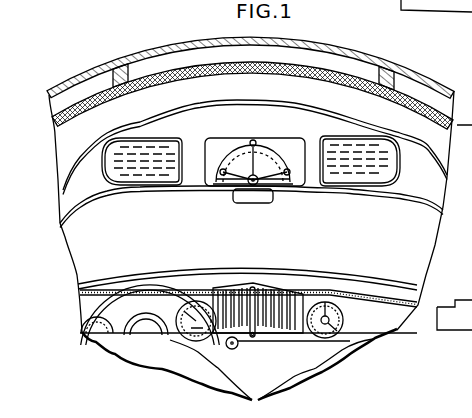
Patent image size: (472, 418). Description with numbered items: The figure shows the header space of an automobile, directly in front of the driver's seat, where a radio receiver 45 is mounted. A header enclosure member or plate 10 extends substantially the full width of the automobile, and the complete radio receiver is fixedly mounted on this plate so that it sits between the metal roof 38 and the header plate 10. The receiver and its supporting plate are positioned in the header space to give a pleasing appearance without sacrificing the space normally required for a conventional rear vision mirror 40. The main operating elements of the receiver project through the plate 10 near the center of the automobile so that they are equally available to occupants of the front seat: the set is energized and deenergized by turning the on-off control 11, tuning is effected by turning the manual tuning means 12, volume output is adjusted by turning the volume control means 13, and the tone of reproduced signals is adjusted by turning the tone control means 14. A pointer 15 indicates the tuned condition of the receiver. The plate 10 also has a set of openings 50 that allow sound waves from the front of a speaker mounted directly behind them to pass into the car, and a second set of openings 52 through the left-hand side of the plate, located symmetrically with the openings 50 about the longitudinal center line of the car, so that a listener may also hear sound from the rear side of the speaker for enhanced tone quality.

The header plate 10 is at (268, 131).
The on-off control knob 11 is at (264, 181).
The manual tuning knob 12 is at (289, 175).
The volume control knob 13 is at (222, 175).
The tone control knob 14 is at (258, 142).
The pointer 15 is at (240, 176).
The metal roof 38 is at (376, 58).
The rear vision mirror 40 is at (262, 201).
The radio receiver 45 is at (218, 146).
The set of openings 50 is at (370, 173).
The set of openings 52 is at (150, 181).